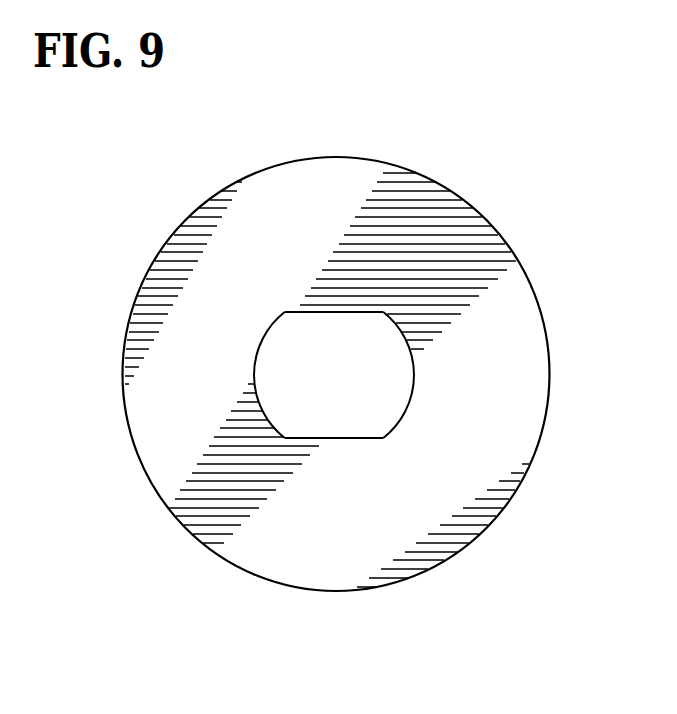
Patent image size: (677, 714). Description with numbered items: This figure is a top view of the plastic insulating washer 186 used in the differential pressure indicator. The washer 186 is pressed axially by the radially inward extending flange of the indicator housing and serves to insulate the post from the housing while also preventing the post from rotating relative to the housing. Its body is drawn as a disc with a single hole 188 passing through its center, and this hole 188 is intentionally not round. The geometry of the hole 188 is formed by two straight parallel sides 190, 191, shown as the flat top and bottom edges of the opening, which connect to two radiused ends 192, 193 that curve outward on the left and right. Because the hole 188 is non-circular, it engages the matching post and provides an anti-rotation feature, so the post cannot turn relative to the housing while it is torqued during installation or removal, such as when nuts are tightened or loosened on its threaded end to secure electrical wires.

The insulating washer 186 is at (492, 310).
The hole 188 is at (340, 380).
The straight parallel side 190 is at (293, 311).
The straight parallel side 191 is at (348, 438).
The radiused end 192 is at (415, 366).
The radiused end 193 is at (252, 364).